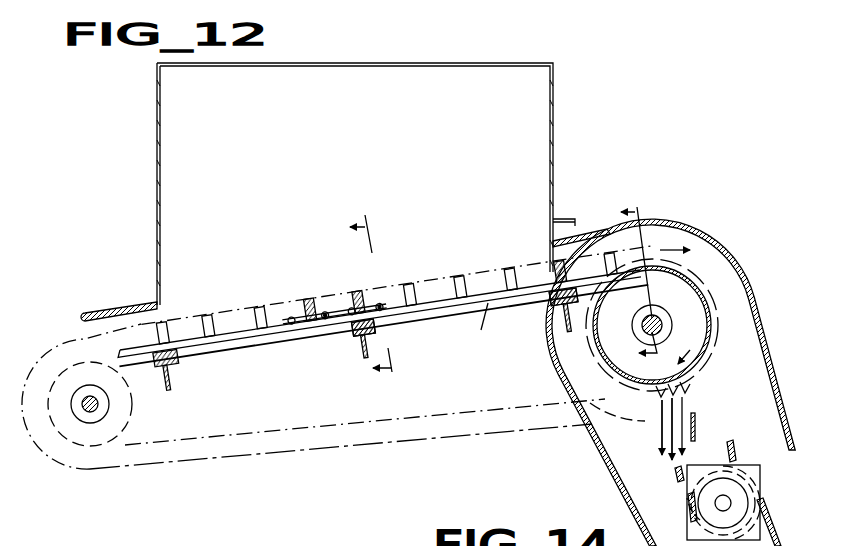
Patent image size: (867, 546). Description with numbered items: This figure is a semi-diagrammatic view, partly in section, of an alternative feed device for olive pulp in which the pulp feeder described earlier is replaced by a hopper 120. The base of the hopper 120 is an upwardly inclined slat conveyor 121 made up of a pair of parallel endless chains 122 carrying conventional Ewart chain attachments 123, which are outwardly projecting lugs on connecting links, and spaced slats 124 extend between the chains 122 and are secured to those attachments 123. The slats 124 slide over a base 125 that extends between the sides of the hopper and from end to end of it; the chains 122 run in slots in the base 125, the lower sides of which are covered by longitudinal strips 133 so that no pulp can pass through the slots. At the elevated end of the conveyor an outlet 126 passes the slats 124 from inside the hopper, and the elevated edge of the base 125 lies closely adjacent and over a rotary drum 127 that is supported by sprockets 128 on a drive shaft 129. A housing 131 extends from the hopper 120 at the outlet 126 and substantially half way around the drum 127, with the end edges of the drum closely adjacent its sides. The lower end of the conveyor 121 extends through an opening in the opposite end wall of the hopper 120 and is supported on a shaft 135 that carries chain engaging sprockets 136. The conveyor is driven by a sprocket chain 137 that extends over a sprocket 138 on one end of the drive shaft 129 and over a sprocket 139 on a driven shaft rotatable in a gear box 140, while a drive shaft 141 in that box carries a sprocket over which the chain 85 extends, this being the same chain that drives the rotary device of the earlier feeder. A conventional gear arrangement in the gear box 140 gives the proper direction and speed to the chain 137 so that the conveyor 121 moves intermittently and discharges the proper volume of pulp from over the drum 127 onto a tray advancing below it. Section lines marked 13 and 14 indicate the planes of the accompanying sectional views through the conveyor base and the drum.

The hopper 120 is at (553, 134).
The slat conveyor 121 is at (422, 266).
The endless chains 122 is at (337, 300).
The Ewart chain attachments 123 is at (303, 312).
The slats 124 is at (366, 286).
The base 125 is at (451, 306).
The outlet 126 is at (548, 259).
The rotary drum 127 is at (679, 268).
The sprockets 128 is at (689, 293).
The drive shaft 129 is at (662, 323).
The housing 131 is at (673, 221).
The strips 133 is at (323, 329).
The shaft 135 is at (90, 411).
The chain engaging sprockets 136 is at (133, 411).
The sprocket chain 137 is at (742, 441).
The sprocket 138 is at (637, 427).
The sprocket 139 is at (713, 486).
The gear box 140 is at (763, 473).
The drive shaft 141 is at (683, 502).
The chain 85 is at (774, 538).
The section line 13 is at (362, 298).
The section line 14 is at (628, 286).